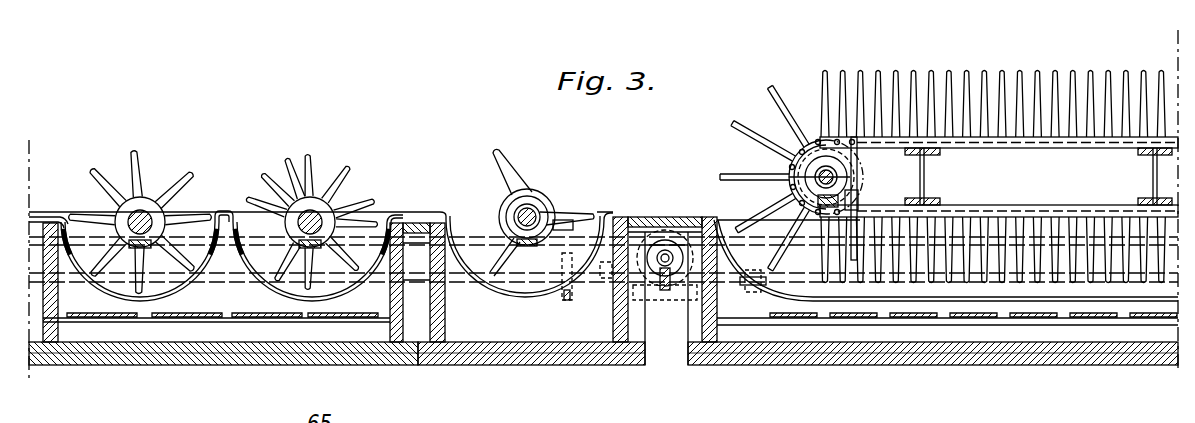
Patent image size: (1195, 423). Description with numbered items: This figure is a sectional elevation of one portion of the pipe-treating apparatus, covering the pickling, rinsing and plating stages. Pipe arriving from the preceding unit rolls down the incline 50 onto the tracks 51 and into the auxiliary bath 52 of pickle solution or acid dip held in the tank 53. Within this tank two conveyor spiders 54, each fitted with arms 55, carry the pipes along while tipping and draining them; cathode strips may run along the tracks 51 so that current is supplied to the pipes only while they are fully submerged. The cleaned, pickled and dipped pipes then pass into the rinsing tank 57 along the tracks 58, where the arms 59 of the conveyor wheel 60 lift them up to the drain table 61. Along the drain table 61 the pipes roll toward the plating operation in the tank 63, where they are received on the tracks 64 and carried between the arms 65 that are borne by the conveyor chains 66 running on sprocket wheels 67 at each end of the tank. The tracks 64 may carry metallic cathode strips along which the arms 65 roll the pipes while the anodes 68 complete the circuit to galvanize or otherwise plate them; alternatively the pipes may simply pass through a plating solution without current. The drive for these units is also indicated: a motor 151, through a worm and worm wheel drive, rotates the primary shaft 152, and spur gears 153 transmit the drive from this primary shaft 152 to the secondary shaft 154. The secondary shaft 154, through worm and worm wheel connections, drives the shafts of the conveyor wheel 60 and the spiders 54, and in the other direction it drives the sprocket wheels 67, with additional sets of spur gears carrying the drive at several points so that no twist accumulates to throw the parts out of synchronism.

The incline 50 is at (40, 218).
The tracks 51 is at (282, 297).
The auxiliary bath 52 is at (384, 322).
The tank 53 is at (233, 350).
The conveyor spiders 54 is at (322, 212).
The arms 55 is at (332, 166).
The rinsing tank 57 is at (521, 350).
The tracks 58 is at (512, 285).
The arms 59 is at (505, 180).
The conveyor wheel 60 is at (537, 205).
The drain table 61 is at (657, 215).
The tank 63 is at (975, 350).
The tracks 64 is at (807, 283).
The arms 65 is at (792, 200).
The conveyor chains 66 is at (800, 150).
The sprocket wheels 67 is at (863, 178).
The anodes 68 is at (866, 318).
The motor 151 is at (682, 243).
The primary shaft 152 is at (610, 278).
The spur gears 153 is at (562, 298).
The secondary shaft 154 is at (1010, 240).